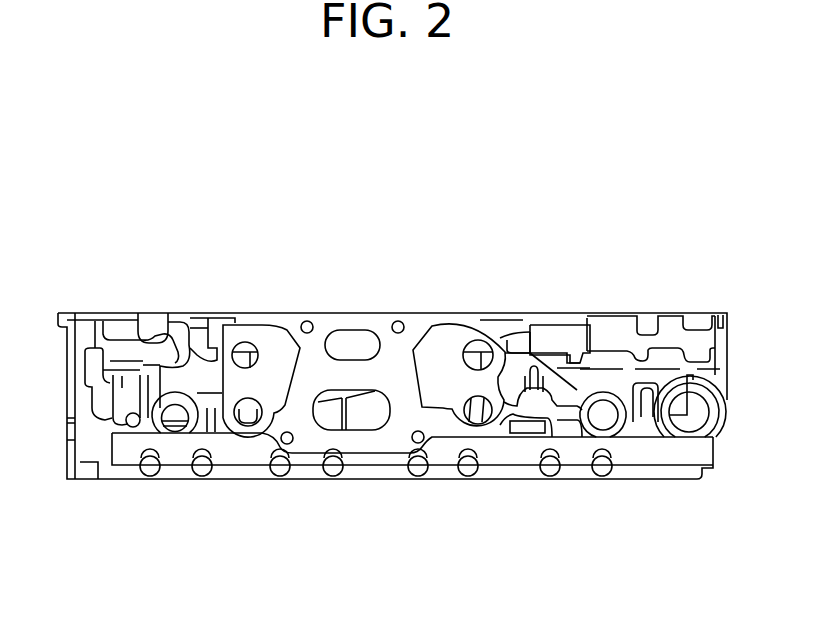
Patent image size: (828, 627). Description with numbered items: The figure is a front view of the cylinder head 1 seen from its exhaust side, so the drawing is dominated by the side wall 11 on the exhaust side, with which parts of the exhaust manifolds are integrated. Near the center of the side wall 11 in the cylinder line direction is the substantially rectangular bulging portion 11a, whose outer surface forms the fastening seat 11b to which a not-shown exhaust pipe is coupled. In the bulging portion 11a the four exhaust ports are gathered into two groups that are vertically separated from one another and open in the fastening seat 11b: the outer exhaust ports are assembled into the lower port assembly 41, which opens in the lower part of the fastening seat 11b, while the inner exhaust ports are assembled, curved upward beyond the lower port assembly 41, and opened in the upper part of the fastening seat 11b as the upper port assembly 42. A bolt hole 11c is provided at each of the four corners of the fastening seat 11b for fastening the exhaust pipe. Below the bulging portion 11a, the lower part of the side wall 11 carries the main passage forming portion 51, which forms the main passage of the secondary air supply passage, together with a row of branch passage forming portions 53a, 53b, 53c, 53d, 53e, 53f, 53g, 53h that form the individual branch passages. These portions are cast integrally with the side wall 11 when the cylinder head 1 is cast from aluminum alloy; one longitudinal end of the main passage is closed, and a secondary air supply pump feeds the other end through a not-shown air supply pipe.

The cylinder head 1 is at (73, 196).
The side wall 11 is at (447, 335).
The bulging portion 11a is at (315, 319).
The fastening seat 11b is at (261, 381).
The bolt hole 11c is at (305, 320).
The lower port assembly 41 is at (372, 413).
The upper port assembly 42 is at (355, 342).
The main passage forming portion 51 is at (660, 452).
The branch passage forming portion 53a is at (604, 472).
The branch passage forming portion 53b is at (552, 476).
The branch passage forming portion 53c is at (470, 472).
The branch passage forming portion 53d is at (418, 476).
The branch passage forming portion 53e is at (333, 476).
The branch passage forming portion 53f is at (283, 476).
The branch passage forming portion 53g is at (202, 476).
The branch passage forming portion 53h is at (150, 476).